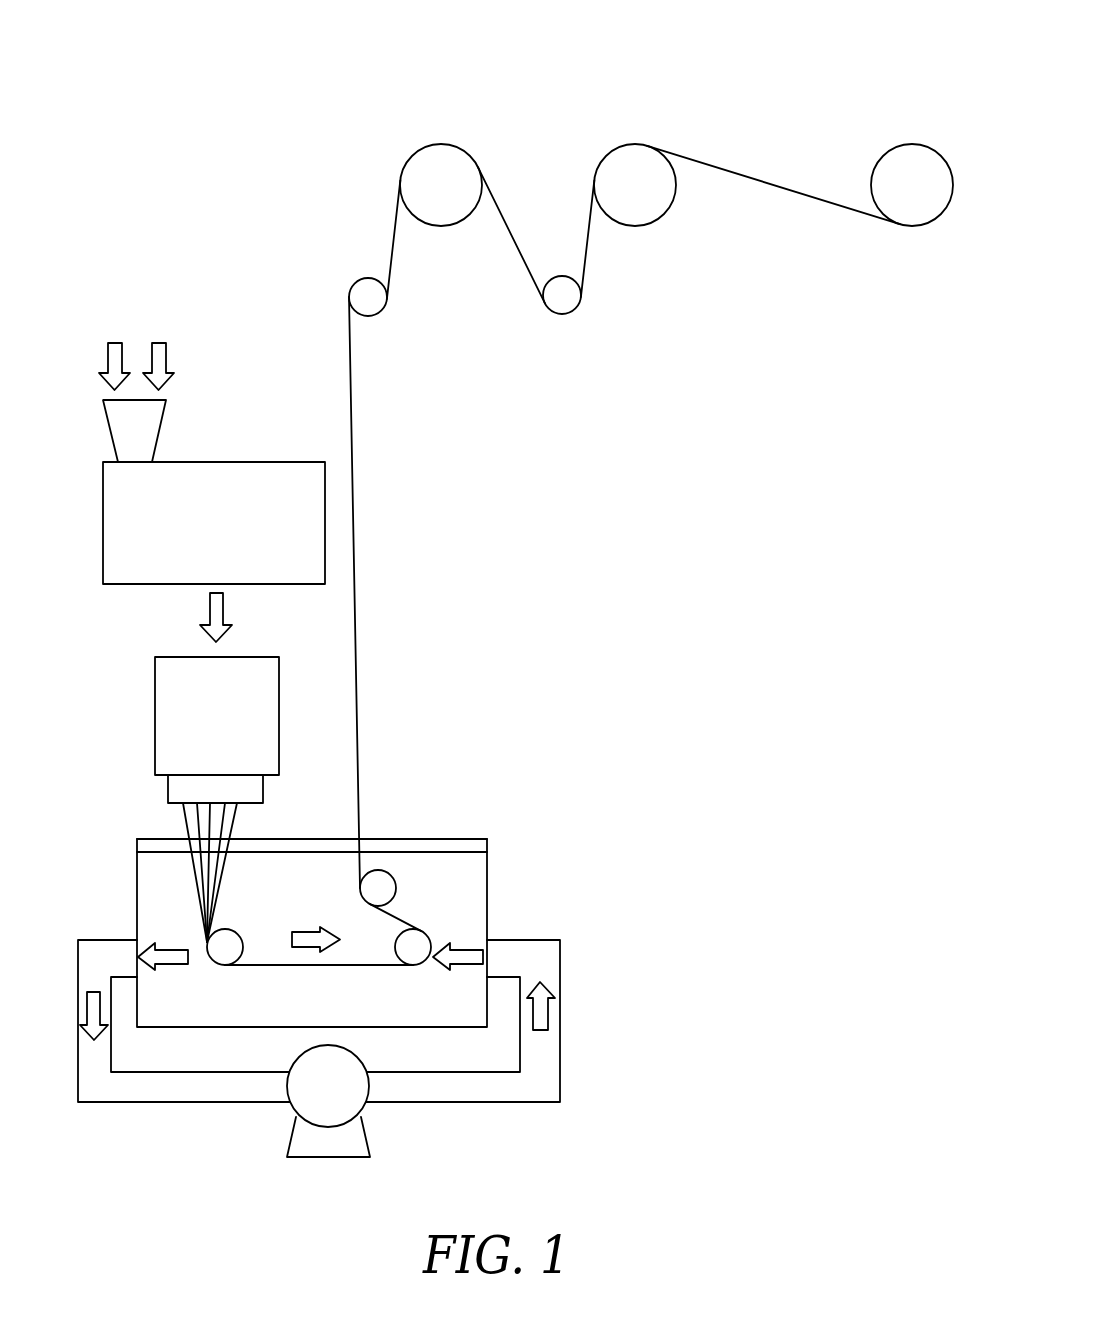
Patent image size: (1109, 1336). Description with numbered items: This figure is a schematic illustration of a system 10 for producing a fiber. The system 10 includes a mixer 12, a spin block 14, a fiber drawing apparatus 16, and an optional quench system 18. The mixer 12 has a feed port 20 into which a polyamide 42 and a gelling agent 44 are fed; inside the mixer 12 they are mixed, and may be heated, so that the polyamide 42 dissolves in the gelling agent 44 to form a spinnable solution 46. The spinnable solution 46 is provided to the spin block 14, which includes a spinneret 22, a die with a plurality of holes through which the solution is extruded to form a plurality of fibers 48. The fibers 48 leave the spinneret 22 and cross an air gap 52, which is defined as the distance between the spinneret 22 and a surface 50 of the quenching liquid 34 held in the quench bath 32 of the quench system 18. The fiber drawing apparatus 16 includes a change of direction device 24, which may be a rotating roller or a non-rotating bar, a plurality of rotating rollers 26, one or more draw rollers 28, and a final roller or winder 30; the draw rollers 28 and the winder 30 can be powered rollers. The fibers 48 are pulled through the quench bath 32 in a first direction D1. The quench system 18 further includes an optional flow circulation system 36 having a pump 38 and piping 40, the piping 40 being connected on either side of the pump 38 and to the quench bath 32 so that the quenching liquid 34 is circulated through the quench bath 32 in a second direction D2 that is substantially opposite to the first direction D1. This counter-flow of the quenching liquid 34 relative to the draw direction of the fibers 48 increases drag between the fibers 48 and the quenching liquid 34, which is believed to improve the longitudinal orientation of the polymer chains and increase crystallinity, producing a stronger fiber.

The system 10 is at (816, 35).
The mixer 12 is at (298, 441).
The spin block 14 is at (126, 700).
The fiber drawing apparatus 16 is at (679, 246).
The quench system 18 is at (466, 814).
The feed port 20 is at (166, 424).
The spinneret 22 is at (168, 787).
The change of direction device 24 is at (221, 960).
The rollers 26 is at (363, 284).
The draw rollers 28 is at (437, 153).
The winder 30 is at (910, 155).
The quench bath 32 is at (488, 892).
The quenching liquid 34 is at (480, 863).
The flow circulation system 36 is at (546, 1096).
The pump 38 is at (371, 1087).
The piping 40 is at (560, 1018).
The polyamide 42 is at (166, 357).
The gelling agent 44 is at (108, 358).
The spinnable solution 46 is at (223, 608).
The fibers 48 is at (766, 182).
The surface 50 is at (401, 846).
The air gap 52 is at (110, 805).
The first direction D1 is at (316, 928).
The second direction D2 is at (310, 972).